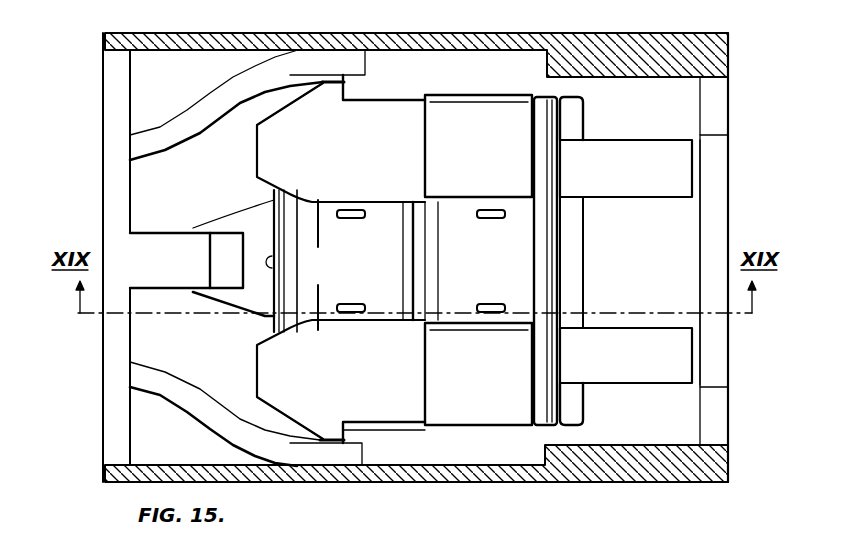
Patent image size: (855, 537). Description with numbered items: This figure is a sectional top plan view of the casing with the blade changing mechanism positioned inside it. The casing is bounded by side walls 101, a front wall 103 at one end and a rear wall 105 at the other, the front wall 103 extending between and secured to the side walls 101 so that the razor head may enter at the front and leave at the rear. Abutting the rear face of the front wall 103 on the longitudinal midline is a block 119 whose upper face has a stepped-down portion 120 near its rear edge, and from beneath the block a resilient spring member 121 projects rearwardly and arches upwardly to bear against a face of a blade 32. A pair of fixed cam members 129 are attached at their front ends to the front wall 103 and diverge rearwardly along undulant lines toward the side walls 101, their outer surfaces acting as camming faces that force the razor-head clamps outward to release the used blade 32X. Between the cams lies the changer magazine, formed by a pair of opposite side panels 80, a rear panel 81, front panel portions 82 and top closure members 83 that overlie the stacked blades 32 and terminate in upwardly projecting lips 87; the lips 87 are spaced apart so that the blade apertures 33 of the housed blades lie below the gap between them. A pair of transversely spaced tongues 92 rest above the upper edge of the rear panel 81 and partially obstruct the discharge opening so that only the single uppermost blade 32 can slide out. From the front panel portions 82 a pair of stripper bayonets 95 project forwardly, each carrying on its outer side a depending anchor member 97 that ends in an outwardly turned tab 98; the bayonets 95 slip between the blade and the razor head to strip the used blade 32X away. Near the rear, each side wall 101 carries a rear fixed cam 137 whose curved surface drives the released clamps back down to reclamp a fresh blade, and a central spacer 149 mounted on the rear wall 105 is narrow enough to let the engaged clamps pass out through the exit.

The side walls 101 is at (325, 42).
The front wall 103 is at (116, 190).
The rear wall 105 is at (722, 110).
The block 119 is at (207, 262).
The stepped-down portion 120 is at (228, 262).
The spring member 121 is at (263, 223).
The fixed cam members 129 is at (230, 93).
The rear fixed cam 137 is at (722, 63).
The central spacer 149 is at (720, 348).
The stripper bayonets 95 is at (270, 153).
The tab 98 is at (325, 87).
The anchor member 97 is at (345, 91).
The top closure members 83 is at (450, 135).
The lip 87 is at (468, 197).
The side panels 80 is at (544, 95).
The rear panel 81 is at (575, 126).
The front panel portions 82 is at (572, 408).
The tongues 92 is at (623, 158).
The blades 32 is at (518, 248).
The used blade 32X is at (318, 200).
The blade apertures 33 is at (346, 219).